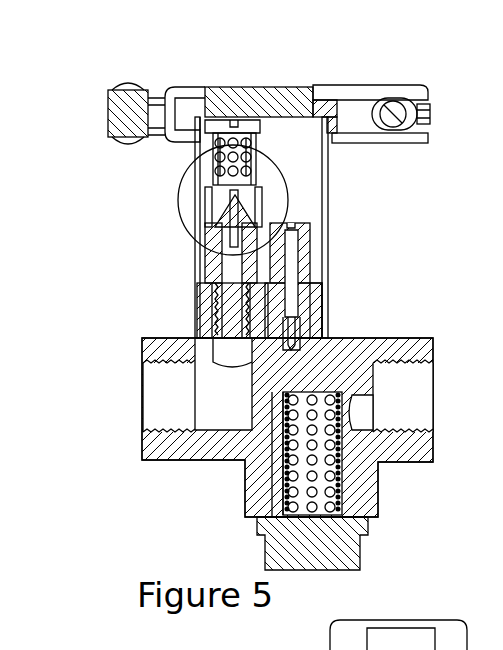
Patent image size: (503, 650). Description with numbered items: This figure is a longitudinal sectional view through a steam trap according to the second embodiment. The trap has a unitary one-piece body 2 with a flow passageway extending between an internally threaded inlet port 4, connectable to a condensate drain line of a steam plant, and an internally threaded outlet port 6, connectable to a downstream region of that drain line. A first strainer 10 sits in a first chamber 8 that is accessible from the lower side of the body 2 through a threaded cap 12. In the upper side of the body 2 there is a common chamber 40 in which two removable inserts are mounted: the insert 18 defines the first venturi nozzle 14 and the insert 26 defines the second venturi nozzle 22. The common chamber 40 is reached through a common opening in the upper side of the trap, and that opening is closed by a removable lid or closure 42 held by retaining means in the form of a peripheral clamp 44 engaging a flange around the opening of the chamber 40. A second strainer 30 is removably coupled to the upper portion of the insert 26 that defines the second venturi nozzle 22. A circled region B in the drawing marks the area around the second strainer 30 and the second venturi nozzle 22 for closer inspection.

The body 2 is at (187, 453).
The inlet port 4 is at (408, 406).
The outlet port 6 is at (152, 420).
The first chamber 8 is at (280, 440).
The first strainer 10 is at (337, 470).
The threaded cap 12 is at (350, 547).
The first venturi nozzle 14 is at (303, 347).
The insert 18 is at (307, 247).
The second venturi nozzle 22 is at (225, 212).
The insert 26 is at (213, 265).
The second strainer 30 is at (215, 170).
The common chamber 40 is at (320, 173).
The removable lid or closure 42 is at (262, 88).
The peripheral clamp 44 is at (392, 92).
The detail B is at (178, 218).